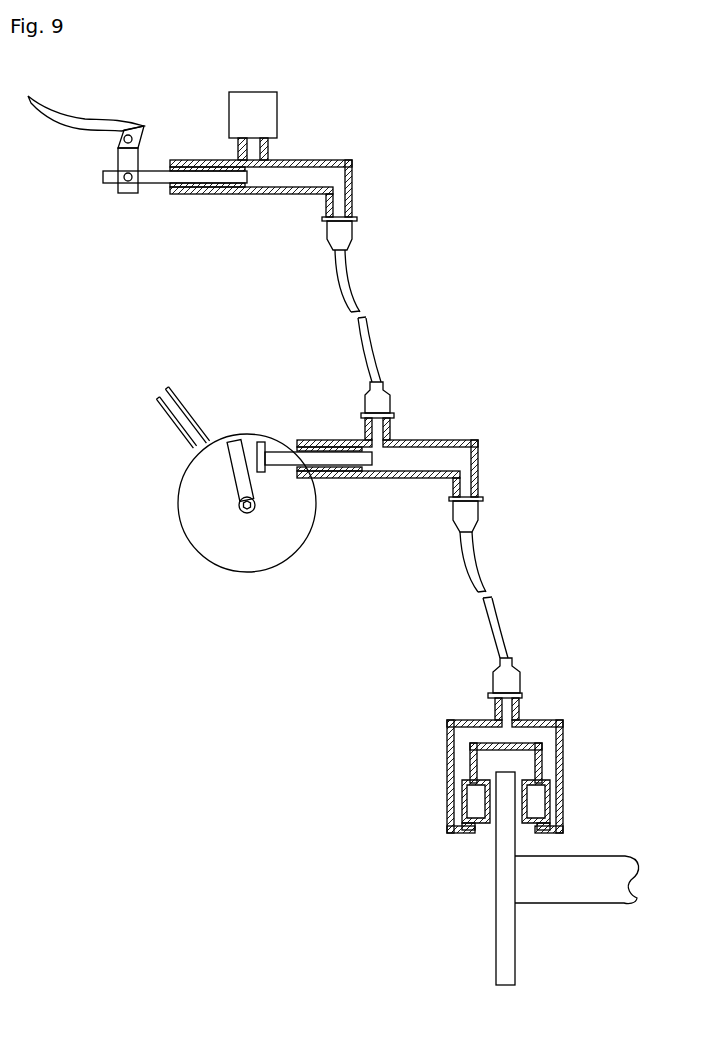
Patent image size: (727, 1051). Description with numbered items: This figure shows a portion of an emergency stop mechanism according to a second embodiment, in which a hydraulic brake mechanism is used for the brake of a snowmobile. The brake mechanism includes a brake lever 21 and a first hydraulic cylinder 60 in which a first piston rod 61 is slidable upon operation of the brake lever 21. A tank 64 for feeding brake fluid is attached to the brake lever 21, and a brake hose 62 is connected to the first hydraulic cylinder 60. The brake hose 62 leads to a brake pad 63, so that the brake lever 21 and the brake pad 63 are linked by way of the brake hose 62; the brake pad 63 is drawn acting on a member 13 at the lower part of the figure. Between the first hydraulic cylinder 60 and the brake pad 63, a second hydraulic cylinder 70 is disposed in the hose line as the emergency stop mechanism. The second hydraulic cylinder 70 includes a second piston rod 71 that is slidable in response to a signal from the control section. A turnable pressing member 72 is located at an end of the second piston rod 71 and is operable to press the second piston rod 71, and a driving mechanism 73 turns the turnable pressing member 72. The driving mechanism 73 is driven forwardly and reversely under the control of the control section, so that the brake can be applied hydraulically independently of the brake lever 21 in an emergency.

The steering column / handle post 13 is at (618, 841).
The brake lever 21 is at (111, 117).
The first hydraulic cylinder 60 is at (355, 148).
The first piston rod 61 is at (155, 178).
The brake hose 62 is at (345, 289).
The brake pad 63 is at (432, 778).
The tank 64 is at (263, 103).
The second hydraulic cylinder 70 is at (486, 438).
The second piston rod 71 is at (278, 455).
The turnable pressing member 72 is at (233, 458).
The driving mechanism 73 is at (193, 475).